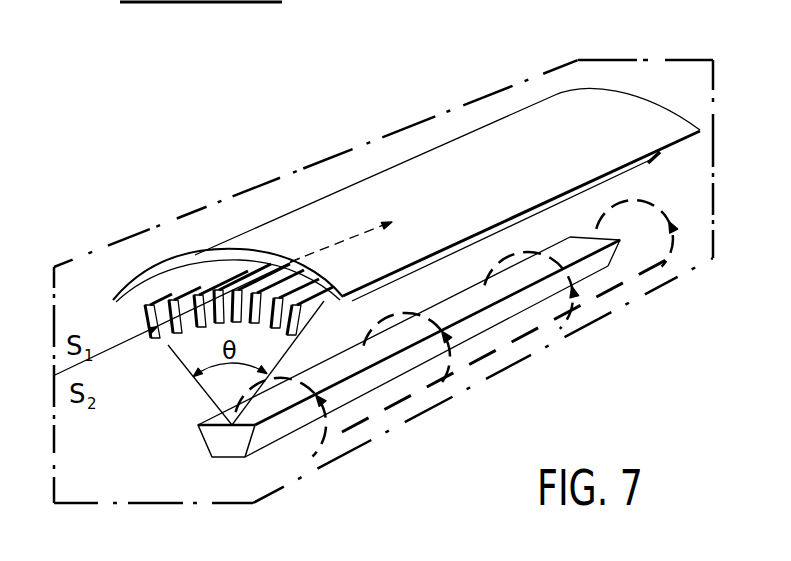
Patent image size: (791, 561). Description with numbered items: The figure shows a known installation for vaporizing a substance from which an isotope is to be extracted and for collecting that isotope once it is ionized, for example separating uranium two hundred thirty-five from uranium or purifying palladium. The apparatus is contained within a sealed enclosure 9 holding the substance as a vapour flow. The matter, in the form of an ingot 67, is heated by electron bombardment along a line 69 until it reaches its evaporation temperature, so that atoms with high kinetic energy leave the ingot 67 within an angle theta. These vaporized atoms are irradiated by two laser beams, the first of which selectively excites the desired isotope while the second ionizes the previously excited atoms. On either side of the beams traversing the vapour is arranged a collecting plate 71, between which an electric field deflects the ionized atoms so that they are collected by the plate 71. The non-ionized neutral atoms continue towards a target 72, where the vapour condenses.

The sealed enclosure 9 is at (562, 72).
The ingot 67 is at (233, 445).
The line 69 is at (466, 292).
The collecting plate 71 is at (198, 295).
The target 72 is at (325, 212).